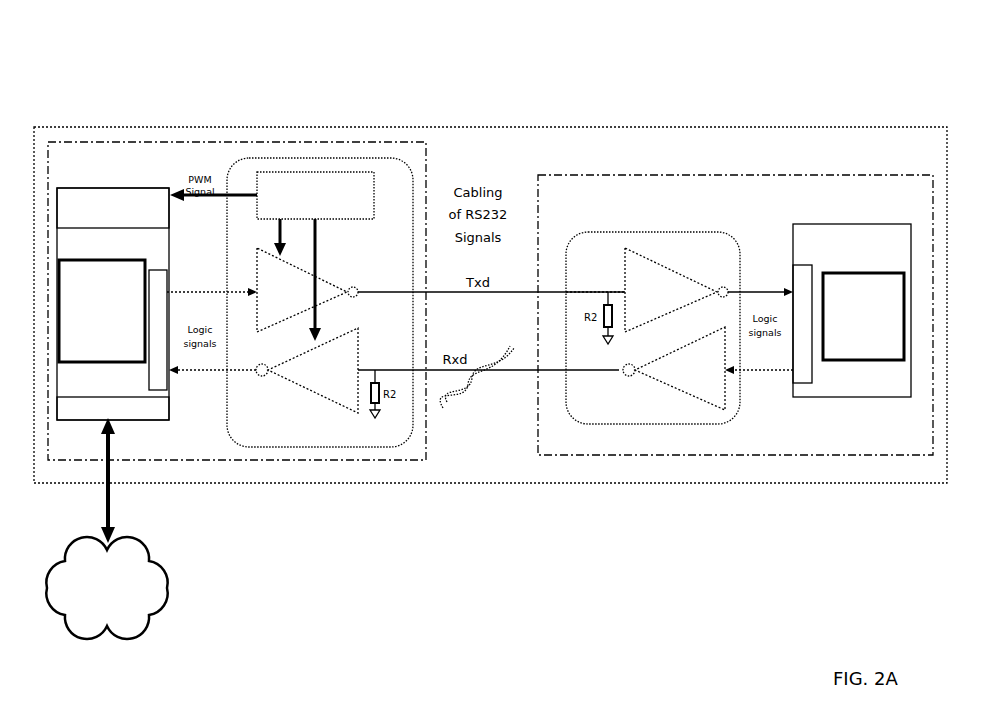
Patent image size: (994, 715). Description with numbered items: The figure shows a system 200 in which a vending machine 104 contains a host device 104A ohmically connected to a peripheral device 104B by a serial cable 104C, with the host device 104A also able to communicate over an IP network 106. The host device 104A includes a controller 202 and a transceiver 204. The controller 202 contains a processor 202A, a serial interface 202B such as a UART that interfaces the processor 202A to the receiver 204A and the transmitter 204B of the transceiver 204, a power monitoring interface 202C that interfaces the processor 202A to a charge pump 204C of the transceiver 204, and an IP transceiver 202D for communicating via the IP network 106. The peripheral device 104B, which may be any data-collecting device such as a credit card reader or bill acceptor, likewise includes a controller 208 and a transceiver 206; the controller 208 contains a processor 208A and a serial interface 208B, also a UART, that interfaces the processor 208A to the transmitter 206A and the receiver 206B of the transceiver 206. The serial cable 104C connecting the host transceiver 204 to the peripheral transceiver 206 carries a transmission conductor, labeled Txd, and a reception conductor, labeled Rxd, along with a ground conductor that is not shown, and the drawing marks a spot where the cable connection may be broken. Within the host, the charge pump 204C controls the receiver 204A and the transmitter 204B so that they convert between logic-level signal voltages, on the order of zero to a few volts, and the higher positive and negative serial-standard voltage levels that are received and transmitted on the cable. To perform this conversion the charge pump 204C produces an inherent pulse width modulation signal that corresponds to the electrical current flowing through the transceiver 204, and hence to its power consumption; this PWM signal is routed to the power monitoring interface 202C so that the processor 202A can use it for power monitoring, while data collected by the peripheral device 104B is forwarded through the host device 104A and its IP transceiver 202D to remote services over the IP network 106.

The system 200 is at (511, 32).
The vending machine 104 is at (490, 122).
The host device 104A is at (238, 136).
The peripheral device 104B is at (740, 172).
The RS-232 cable 104C is at (500, 300).
The IP network 106 is at (172, 550).
The controller 202 is at (113, 304).
The processor 202A is at (102, 311).
The serial interface 202B is at (154, 266).
The power monitoring interface 202C is at (113, 208).
The IP transceiver 202D is at (113, 408).
The transceiver 204 is at (320, 302).
The receiver 204A is at (307, 370).
The transmitter 204B is at (307, 290).
The charge pump 204C is at (315, 195).
The transceiver 206 is at (653, 328).
The transmitter 206A is at (674, 368).
The receiver 206B is at (676, 290).
The controller 208 is at (852, 310).
The processor 208A is at (863, 316).
The serial interface 208B is at (817, 262).